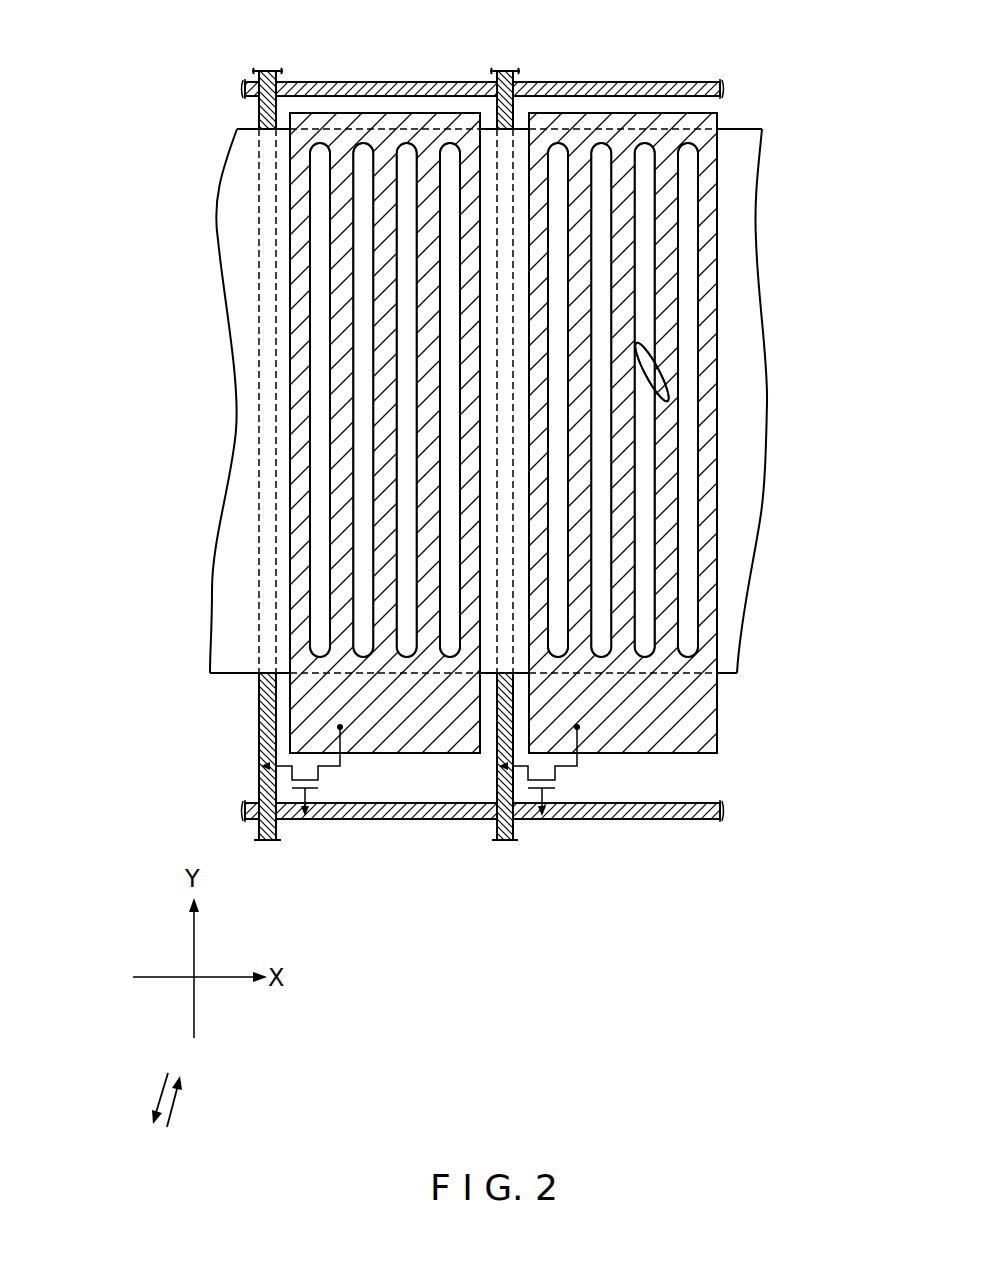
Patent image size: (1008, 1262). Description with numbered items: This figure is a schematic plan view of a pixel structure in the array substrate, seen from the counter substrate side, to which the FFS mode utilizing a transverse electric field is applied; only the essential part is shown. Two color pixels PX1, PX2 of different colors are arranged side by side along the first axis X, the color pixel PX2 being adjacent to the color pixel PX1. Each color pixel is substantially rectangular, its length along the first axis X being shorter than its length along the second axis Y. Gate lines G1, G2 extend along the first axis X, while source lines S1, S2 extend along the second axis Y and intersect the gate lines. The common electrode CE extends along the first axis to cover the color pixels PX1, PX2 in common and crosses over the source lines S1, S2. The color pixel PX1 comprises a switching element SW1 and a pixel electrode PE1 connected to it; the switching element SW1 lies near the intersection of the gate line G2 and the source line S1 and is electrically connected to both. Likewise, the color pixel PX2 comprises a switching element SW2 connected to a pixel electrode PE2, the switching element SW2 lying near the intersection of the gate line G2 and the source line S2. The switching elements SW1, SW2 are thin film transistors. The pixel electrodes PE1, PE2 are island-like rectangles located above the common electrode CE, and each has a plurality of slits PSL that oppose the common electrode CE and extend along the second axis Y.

The source line S1 is at (267, 68).
The source line S2 is at (505, 68).
The gate line G1 is at (722, 89).
The gate line G2 is at (722, 814).
The color pixel PX1 is at (339, 448).
The color pixel PX2 is at (652, 448).
The pixel electrode PE1 is at (290, 713).
The pixel electrode PE2 is at (717, 710).
The switching element SW1 is at (331, 786).
The switching element SW2 is at (568, 787).
The slit PSL is at (702, 469).
The common electrode CE is at (690, 607).